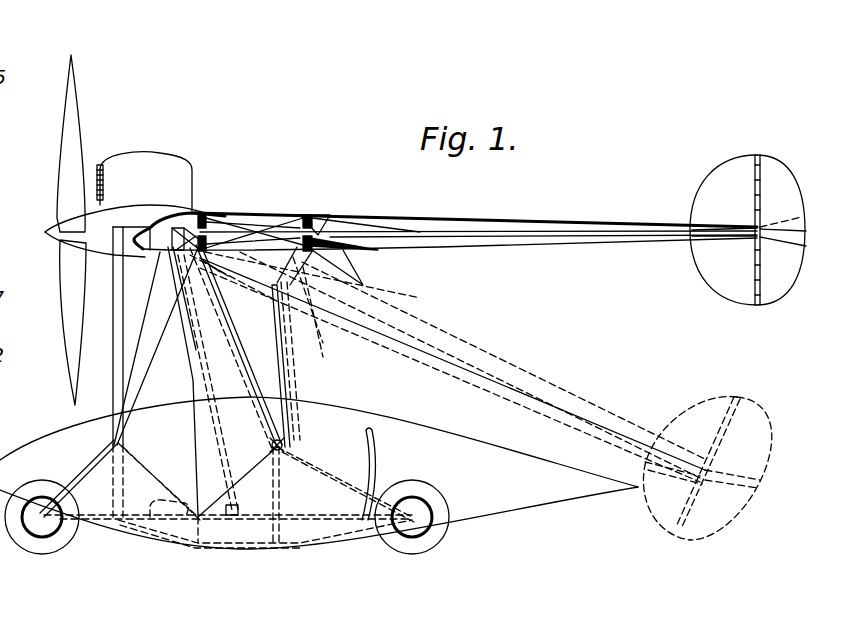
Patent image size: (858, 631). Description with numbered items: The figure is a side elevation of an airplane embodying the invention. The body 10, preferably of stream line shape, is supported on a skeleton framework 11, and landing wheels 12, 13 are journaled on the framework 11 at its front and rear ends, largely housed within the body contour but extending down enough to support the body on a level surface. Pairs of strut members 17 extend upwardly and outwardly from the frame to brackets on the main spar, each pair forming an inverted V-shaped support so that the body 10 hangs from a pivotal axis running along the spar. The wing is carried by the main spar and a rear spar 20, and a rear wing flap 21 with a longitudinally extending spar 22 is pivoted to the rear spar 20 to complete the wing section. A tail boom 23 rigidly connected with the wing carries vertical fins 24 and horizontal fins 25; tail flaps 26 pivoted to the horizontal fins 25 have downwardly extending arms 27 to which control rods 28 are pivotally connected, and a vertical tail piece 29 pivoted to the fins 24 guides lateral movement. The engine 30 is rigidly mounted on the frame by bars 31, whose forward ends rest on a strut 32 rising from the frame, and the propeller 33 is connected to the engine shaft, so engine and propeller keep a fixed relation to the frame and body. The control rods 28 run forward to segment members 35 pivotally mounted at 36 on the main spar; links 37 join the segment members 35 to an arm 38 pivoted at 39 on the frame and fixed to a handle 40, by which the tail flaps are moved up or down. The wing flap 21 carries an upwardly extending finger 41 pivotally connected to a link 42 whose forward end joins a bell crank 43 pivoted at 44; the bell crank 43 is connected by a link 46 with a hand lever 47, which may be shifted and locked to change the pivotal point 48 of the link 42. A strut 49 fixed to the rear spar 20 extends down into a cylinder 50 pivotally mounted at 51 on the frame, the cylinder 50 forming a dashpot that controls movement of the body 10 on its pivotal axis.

The body 10 is at (493, 490).
The skeleton framework 11 is at (300, 540).
The landing wheel 12 is at (56, 548).
The landing wheel 13 is at (420, 545).
The strut members 17 is at (138, 388).
The rear spar 20 is at (273, 220).
The rear wing flap 21 is at (355, 233).
The longitudinally extending spar 22 is at (335, 228).
The tail boom 23 is at (588, 229).
The vertical fins 24 is at (729, 181).
The horizontal fins 25 is at (732, 229).
The tail flaps 26 is at (806, 231).
The downwardly extending arms 27 is at (806, 244).
The control rods 28 is at (678, 247).
The vertical tail piece 29 is at (787, 176).
The engine 30 is at (115, 208).
The bars 31 is at (132, 228).
The strut 32 is at (122, 322).
The propeller 33 is at (73, 140).
The segment members 35 is at (160, 252).
The pivot 36 is at (200, 268).
The links 37 is at (188, 343).
The arm 38 is at (250, 502).
The pivot 39 is at (285, 519).
The handle 40 is at (280, 498).
The upwardly extending finger 41 is at (313, 217).
The link 42 is at (242, 230).
The bell crank 43 is at (178, 222).
The pivot 44 is at (203, 214).
The link 46 is at (236, 360).
The hand lever 47 is at (285, 438).
The pivotal point 48 is at (212, 268).
The strut 49 is at (290, 343).
The cylinder 50 is at (291, 389).
The pivot 51 is at (271, 447).